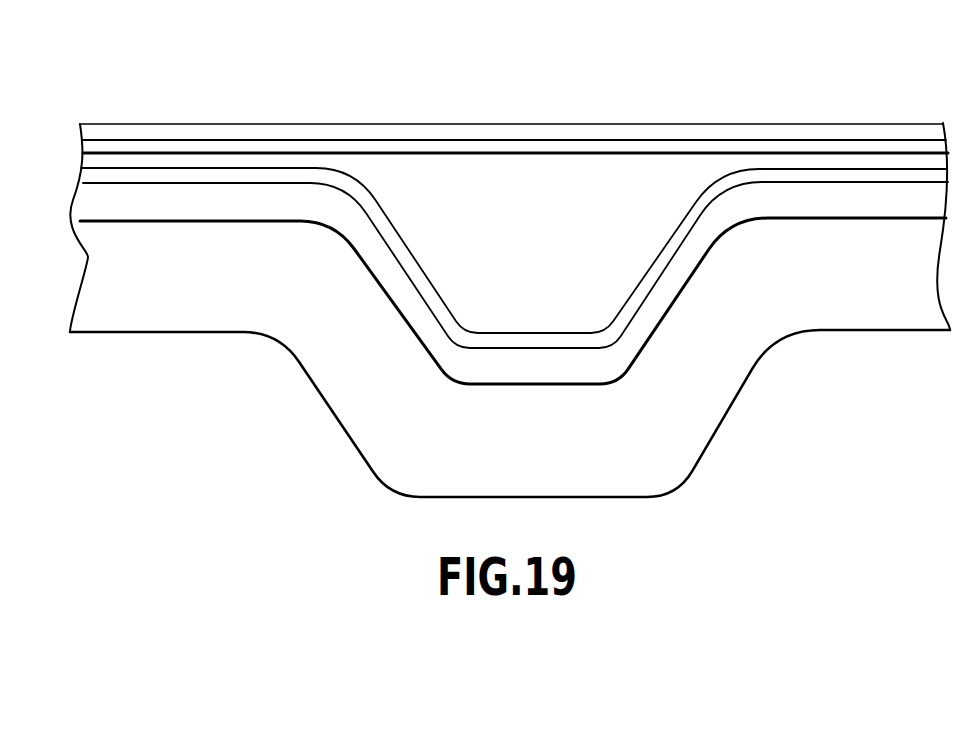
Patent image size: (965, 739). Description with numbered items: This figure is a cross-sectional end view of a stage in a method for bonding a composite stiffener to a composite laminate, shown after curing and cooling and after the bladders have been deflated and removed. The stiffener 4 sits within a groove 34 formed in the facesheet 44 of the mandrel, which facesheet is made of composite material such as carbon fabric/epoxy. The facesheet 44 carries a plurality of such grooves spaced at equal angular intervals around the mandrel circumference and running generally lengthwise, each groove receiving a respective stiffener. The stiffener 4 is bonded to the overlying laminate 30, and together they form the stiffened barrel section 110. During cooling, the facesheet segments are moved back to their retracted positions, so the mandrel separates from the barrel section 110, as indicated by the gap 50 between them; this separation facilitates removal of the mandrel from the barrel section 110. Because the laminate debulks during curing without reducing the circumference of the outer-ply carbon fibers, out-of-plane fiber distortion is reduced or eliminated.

The barrel section 110 is at (678, 110).
The laminate 30 is at (527, 122).
The facesheet 44 is at (124, 220).
The stiffener 4 is at (395, 222).
The groove 34 is at (645, 340).
The gap 50 is at (697, 250).